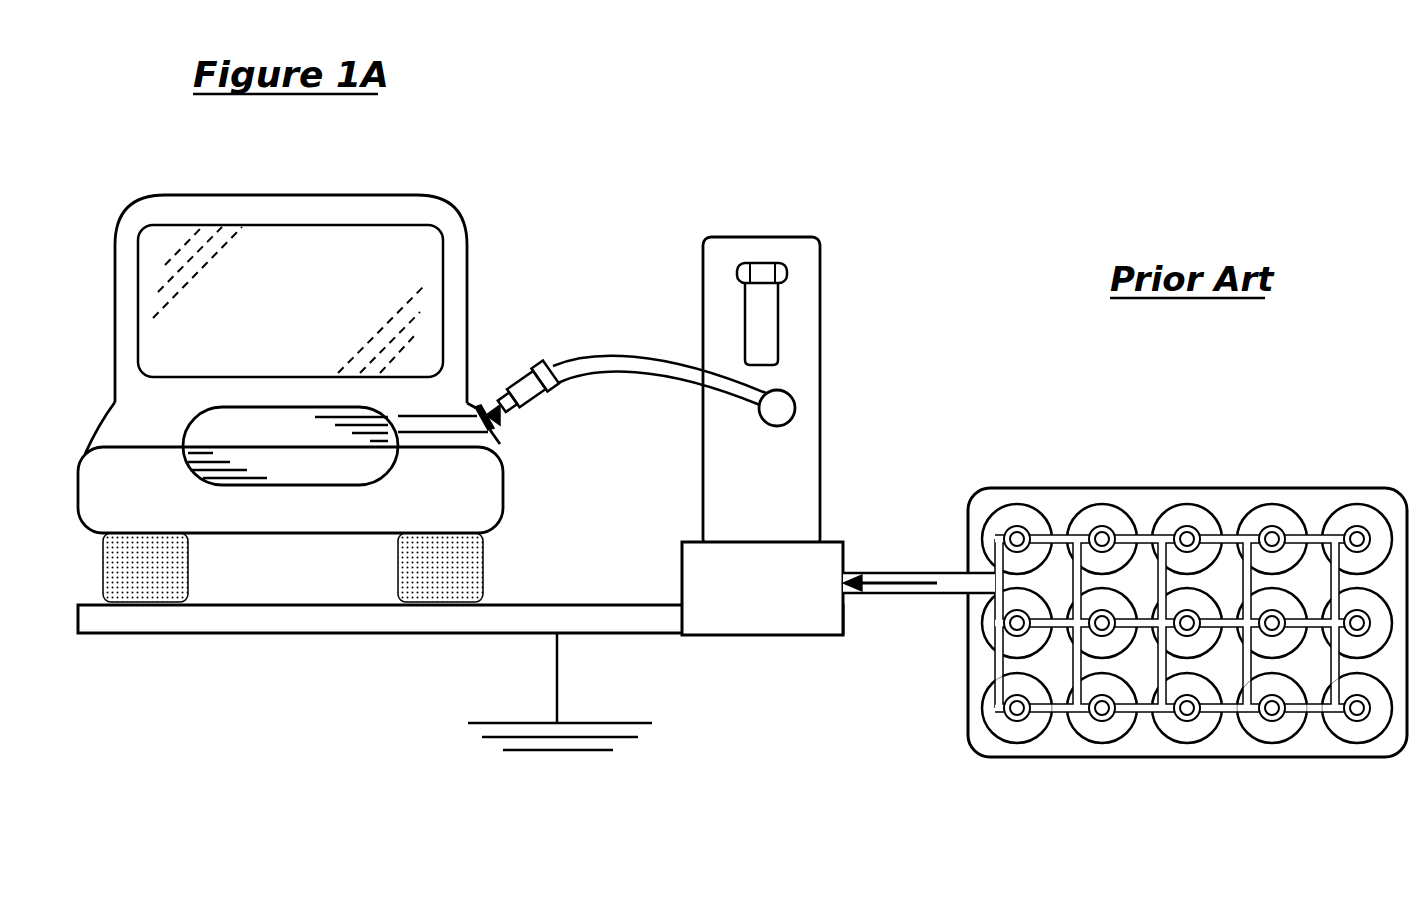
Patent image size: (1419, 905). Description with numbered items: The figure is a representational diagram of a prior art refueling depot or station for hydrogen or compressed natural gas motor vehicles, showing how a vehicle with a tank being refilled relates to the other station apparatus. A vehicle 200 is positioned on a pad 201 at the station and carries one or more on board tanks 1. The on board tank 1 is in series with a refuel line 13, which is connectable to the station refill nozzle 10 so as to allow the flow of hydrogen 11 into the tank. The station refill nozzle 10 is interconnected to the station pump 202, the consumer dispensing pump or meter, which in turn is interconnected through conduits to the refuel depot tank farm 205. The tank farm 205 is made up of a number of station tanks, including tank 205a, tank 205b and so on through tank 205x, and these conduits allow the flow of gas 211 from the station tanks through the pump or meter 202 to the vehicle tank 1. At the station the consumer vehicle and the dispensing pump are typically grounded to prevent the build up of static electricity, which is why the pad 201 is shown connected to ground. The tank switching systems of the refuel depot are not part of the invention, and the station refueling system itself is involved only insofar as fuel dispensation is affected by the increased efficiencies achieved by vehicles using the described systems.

The vehicle 200 is at (452, 217).
The on board tank 1 is at (270, 407).
The refuel line 13 is at (428, 420).
The hydrogen 11 is at (498, 413).
The station refill nozzle 10 is at (530, 410).
The station pump 202 is at (820, 310).
The pad 201 is at (190, 640).
The flow of gas 211 is at (882, 573).
The refuel depot tank farm 205 is at (1165, 757).
The tank 205x is at (1022, 737).
The tank 205b is at (1263, 735).
The tank 205a is at (1358, 733).